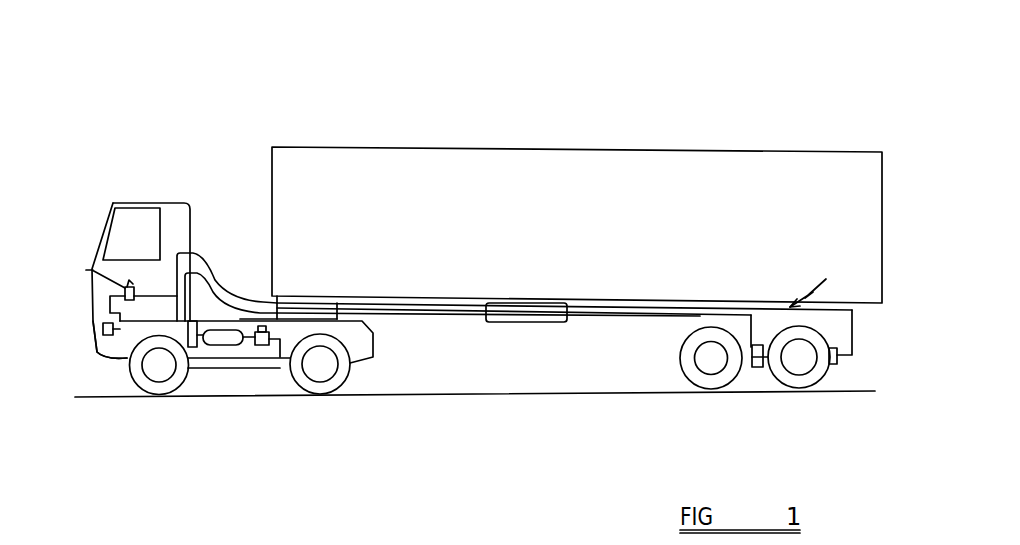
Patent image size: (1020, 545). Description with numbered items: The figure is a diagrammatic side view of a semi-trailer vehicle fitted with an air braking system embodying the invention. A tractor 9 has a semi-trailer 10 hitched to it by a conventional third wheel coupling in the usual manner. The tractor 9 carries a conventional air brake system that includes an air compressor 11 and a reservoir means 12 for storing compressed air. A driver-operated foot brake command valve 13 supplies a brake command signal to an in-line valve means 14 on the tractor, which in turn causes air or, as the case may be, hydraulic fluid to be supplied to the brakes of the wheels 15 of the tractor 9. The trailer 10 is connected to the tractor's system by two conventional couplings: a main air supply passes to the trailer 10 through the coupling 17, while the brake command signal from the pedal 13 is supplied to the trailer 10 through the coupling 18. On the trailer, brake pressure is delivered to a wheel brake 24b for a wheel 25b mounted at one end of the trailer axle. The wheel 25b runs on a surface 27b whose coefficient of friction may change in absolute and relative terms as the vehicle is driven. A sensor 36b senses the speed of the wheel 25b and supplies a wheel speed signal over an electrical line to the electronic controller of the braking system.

The tractor 9 is at (142, 192).
The semi-trailer 10 is at (599, 136).
The air compressor 11 is at (97, 354).
The reservoir means 12 is at (236, 348).
The foot brake command valve 13 is at (88, 270).
The in-line valve means 14 is at (265, 347).
The wheels 15 is at (156, 396).
The coupling 17 is at (196, 376).
The coupling 18 is at (206, 268).
The wheel brake 24b is at (745, 388).
The wheel 25b is at (827, 388).
The surface 27b is at (793, 388).
The sensor 36b is at (836, 358).